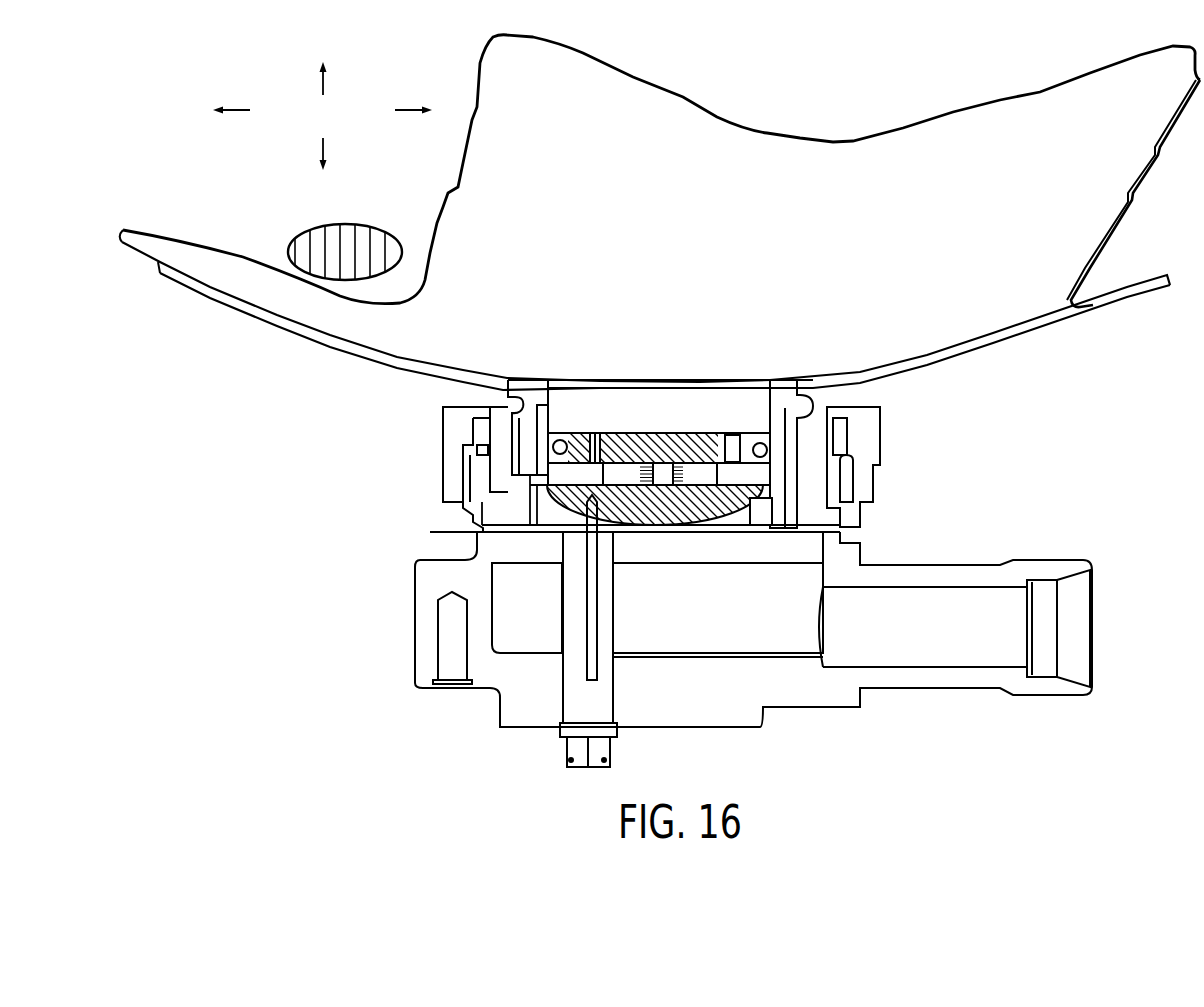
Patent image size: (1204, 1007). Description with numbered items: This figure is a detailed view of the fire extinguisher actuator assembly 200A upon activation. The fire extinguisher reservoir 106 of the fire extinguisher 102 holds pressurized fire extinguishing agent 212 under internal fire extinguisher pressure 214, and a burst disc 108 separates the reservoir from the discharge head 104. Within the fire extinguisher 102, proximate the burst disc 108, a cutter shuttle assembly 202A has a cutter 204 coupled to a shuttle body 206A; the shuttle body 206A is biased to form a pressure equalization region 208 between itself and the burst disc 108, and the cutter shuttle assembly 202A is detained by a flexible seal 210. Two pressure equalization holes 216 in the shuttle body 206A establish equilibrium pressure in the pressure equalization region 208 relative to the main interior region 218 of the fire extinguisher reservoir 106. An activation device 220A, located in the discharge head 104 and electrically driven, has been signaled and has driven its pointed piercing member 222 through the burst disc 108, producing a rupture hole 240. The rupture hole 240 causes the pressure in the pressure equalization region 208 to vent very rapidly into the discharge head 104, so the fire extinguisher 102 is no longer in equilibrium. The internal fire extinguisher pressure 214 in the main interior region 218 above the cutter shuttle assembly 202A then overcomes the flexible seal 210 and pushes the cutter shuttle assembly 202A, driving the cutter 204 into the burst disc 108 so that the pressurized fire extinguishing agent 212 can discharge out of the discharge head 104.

The fire extinguisher 102 is at (324, 350).
The discharge head 104 is at (421, 677).
The fire extinguisher reservoir 106 is at (237, 242).
The burst disc 108 is at (718, 512).
The fire extinguisher actuator assembly 200A is at (761, 414).
The cutter shuttle assembly 202A is at (778, 461).
The cutter 204 is at (633, 480).
The shuttle body 206A is at (544, 438).
The pressure equalization region 208 is at (556, 474).
The flexible seal 210 is at (752, 444).
The pressurized fire extinguishing agent 212 is at (293, 229).
The internal fire extinguisher pressure 214 is at (310, 130).
The pressure equalization hole 216 is at (592, 429).
The main interior region 218 is at (949, 285).
The activation device 220A is at (628, 697).
The actuator pin 222 is at (604, 620).
The rupture hole 240 is at (578, 504).